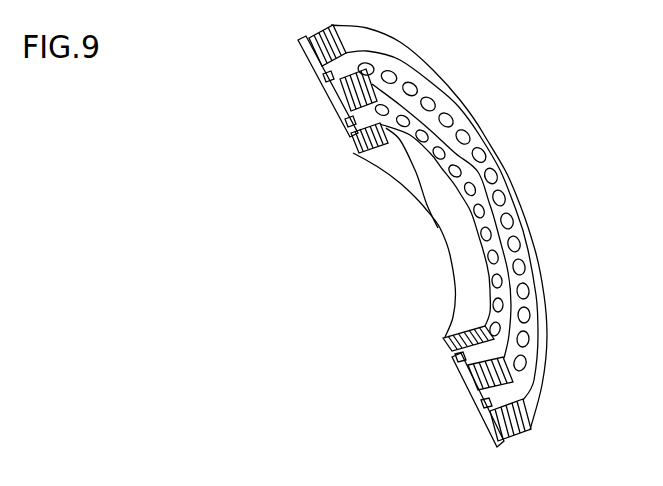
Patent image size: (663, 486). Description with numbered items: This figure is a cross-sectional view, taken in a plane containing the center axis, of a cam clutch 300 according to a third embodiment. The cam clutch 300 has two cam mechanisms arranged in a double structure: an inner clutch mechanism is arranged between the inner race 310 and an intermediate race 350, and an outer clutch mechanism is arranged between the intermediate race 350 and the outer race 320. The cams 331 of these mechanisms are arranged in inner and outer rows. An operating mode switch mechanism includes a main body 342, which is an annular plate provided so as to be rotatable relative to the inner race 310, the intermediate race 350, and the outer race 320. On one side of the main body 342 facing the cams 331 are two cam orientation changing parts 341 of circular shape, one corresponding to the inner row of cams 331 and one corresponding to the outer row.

The cam clutch 300 is at (214, 77).
The inner race 310 is at (497, 191).
The outer race 320 is at (423, 80).
The cams 331 is at (510, 275).
The cam orientation changing parts 341 is at (323, 80).
The main body 342 is at (303, 51).
The intermediate race 350 is at (450, 137).